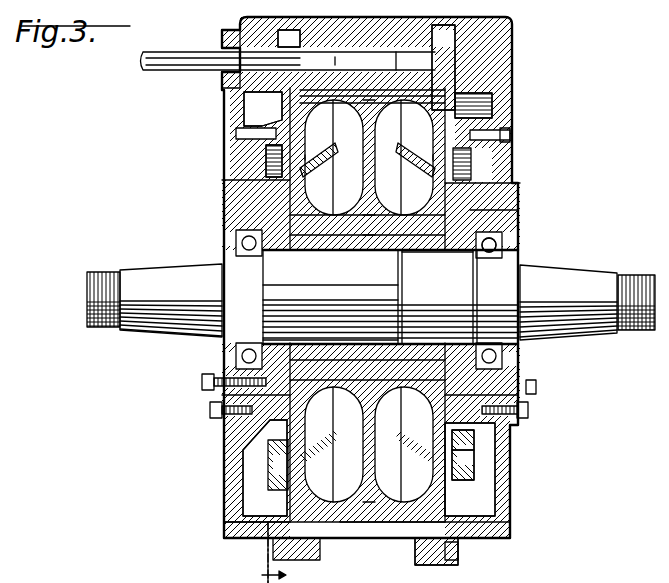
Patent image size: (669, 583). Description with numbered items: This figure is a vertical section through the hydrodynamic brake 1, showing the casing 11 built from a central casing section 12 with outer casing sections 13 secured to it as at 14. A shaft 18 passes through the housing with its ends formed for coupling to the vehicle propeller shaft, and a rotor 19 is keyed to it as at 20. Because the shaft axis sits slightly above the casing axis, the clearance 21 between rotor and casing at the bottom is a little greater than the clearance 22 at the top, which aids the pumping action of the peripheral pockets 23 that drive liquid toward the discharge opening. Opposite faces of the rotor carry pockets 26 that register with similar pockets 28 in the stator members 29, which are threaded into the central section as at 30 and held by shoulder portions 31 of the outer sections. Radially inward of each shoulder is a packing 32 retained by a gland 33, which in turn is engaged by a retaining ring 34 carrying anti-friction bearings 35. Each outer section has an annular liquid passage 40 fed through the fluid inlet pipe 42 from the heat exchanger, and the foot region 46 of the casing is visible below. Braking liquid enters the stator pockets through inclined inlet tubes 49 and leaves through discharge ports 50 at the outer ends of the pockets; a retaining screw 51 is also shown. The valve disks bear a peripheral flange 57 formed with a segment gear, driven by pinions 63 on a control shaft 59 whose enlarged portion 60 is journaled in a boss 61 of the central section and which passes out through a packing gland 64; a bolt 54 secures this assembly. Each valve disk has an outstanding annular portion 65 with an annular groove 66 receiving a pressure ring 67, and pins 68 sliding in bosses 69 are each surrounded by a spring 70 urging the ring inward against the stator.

The variable speed transmission 1 is at (232, 20).
The casing 11 is at (222, 540).
The central casing section 12 is at (366, 538).
The outer casing section 13 is at (222, 466).
The securing means 14 is at (460, 550).
The shaft 18 is at (330, 287).
The rotor 19 is at (372, 225).
The key 20 is at (376, 352).
The clearance 21 is at (383, 532).
The clearance 22 is at (379, 116).
The peripheral pockets 23 is at (378, 500).
The rotor pockets 26 is at (368, 303).
The stator pockets 28 is at (369, 274).
The stator member 29 is at (316, 352).
The threaded connection 30 is at (300, 552).
The shoulder portion 31 is at (298, 252).
The packing 32 is at (322, 250).
The gland 33 is at (520, 205).
The retaining ring 34 is at (522, 220).
The anti-friction bearings 35 is at (522, 244).
The liquid passage 40 is at (255, 486).
The fluid inlet pipe 42 is at (517, 560).
The foot 46 is at (410, 568).
The inlet tubes 49 is at (318, 170).
The discharge ports 50 is at (372, 112).
The adjusting screw 51 is at (268, 158).
The threaded bolt 54 is at (480, 100).
The peripheral flange 57 is at (258, 522).
The shaft 59 is at (173, 62).
The enlarged portion 60 is at (346, 56).
The boss 61 is at (396, 40).
The pinions 63 is at (298, 48).
The packing gland 64 is at (222, 80).
The annular portion 65 is at (458, 484).
The annular groove 66 is at (471, 450).
The pressure ring 67 is at (498, 128).
The pins 68 is at (512, 135).
The bosses 69 is at (512, 144).
The spring 70 is at (484, 126).